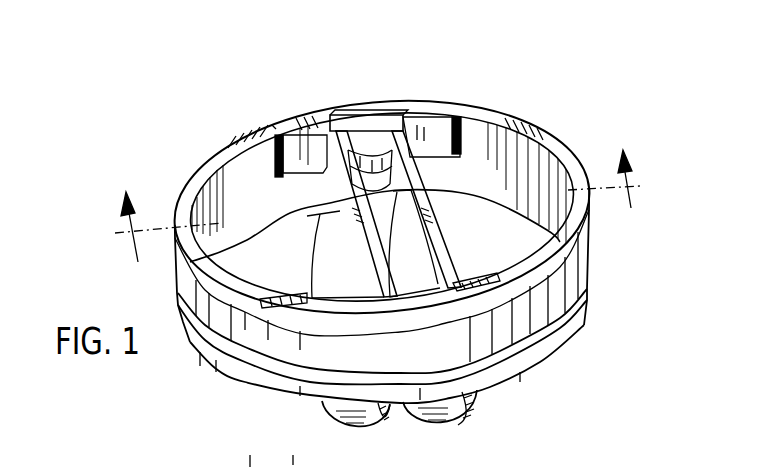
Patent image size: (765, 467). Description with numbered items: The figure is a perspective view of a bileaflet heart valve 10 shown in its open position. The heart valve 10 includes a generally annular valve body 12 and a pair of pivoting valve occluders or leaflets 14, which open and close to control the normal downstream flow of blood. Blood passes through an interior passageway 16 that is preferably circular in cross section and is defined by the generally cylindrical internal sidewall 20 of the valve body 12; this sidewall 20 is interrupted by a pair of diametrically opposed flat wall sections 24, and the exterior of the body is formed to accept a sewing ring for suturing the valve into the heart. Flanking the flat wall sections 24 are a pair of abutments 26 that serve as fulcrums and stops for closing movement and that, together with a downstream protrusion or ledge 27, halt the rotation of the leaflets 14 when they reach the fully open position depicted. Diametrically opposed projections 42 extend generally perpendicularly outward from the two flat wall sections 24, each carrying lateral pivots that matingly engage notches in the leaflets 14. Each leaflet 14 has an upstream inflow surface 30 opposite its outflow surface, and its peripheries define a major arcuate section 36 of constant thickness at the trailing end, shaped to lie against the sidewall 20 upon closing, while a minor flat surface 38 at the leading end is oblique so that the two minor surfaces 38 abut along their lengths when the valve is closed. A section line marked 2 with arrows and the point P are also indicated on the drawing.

The heart valve 10 is at (487, 88).
The valve body 12 is at (560, 301).
The leaflets 14 is at (479, 419).
The interior passageway 16 is at (283, 276).
The sidewall 20 is at (226, 157).
The flat wall sections 24 is at (360, 123).
The abutments 26 is at (311, 122).
The ledge 27 is at (356, 150).
The inflow surface 30 is at (333, 250).
The major arcuate section 36 is at (381, 427).
The minor flat surface 38 is at (455, 251).
The projections 42 is at (379, 185).
The pivot point P is at (274, 128).
The section line 2 is at (381, 206).